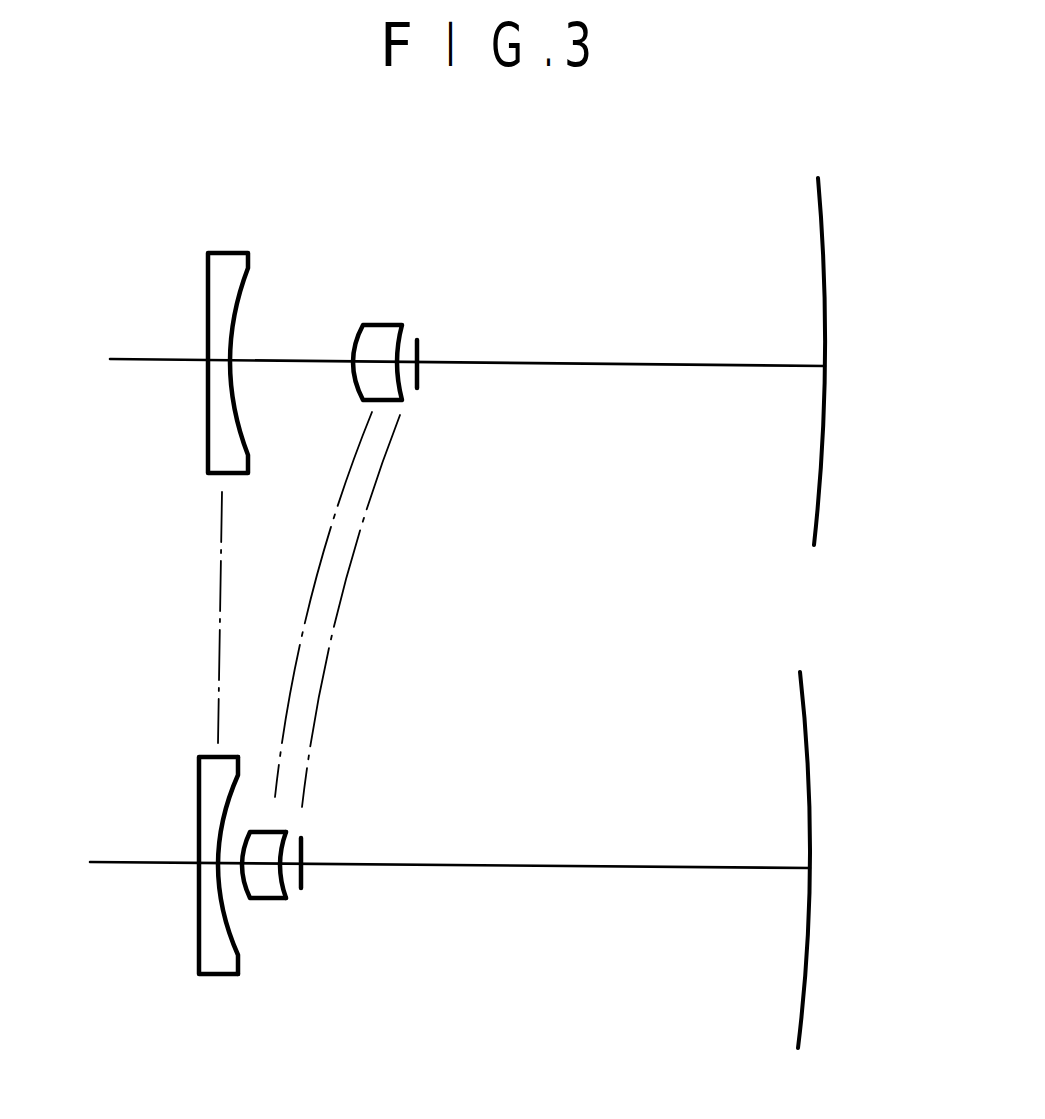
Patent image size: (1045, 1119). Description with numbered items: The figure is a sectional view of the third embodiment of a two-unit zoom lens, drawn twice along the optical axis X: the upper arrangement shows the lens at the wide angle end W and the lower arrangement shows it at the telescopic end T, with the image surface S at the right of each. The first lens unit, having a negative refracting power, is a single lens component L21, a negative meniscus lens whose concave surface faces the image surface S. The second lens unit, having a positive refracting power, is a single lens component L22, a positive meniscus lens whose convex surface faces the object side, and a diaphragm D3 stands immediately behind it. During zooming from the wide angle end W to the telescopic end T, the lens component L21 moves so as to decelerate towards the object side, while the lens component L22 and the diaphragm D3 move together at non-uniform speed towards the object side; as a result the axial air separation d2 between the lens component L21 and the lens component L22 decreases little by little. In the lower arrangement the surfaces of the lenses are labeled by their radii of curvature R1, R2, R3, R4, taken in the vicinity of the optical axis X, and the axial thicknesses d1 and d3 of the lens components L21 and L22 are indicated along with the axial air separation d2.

The lens component L21 is at (229, 258).
The lens component L22 is at (383, 327).
The diaphragm D3 is at (420, 352).
The optical axis X is at (617, 363).
The image surface S is at (826, 292).
The wide angle end W is at (85, 358).
The telescopic end T is at (63, 863).
The radius of curvature R1 is at (198, 936).
The radius of curvature R2 is at (238, 940).
The radius of curvature R3 is at (243, 888).
The radius of curvature R4 is at (282, 880).
The axial thickness d1 is at (215, 863).
The axial air separation d2 is at (233, 863).
The axial thickness d3 is at (263, 863).